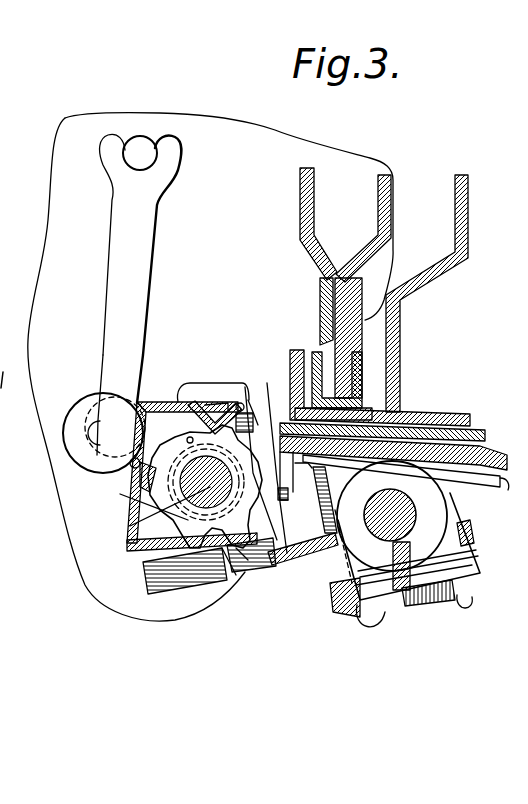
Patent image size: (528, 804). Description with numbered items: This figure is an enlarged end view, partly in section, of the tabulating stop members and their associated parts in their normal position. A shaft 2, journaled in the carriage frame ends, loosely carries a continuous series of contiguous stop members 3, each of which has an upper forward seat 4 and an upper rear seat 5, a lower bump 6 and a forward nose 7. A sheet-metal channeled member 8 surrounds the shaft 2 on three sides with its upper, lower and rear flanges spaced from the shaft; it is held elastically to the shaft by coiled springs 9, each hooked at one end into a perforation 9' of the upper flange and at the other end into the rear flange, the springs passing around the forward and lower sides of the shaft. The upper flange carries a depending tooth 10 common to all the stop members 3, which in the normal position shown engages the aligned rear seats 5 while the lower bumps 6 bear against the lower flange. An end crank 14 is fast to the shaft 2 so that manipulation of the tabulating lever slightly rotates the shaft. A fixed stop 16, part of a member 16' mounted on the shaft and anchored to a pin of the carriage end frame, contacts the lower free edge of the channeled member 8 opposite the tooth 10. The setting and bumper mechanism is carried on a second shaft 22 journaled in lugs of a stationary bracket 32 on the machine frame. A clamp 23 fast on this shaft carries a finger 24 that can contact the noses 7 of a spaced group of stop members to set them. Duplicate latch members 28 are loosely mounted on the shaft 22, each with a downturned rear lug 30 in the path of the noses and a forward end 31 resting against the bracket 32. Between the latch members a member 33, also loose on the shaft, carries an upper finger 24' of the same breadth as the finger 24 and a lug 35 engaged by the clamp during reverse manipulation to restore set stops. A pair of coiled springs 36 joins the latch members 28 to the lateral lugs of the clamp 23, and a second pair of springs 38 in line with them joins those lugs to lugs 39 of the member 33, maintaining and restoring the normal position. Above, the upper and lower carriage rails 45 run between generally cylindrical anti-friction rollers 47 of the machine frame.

The shaft 2 is at (217, 493).
The tabulating stop members 3 is at (130, 523).
The forward seat 4 is at (263, 407).
The rear seat 5 is at (188, 438).
The lower bump 6 is at (197, 530).
The forward nose 7 is at (248, 567).
The channeled member 8 is at (133, 495).
The coiled springs 9 is at (259, 414).
The perforation of upper flange 9' is at (244, 393).
The depending tooth 10 is at (217, 407).
The end crank 14 is at (192, 458).
The fixed stop 16 is at (241, 581).
The stop-carrying member 16' is at (144, 294).
The shaft 22 is at (400, 503).
The clamp 23 is at (438, 548).
The finger 24 is at (303, 563).
The upper finger 24' is at (382, 410).
The latch member 28 is at (492, 480).
The downturned rear lug 30 is at (325, 497).
The forward end 31 is at (500, 482).
The stationary bracket 32 is at (488, 448).
The member 33 is at (418, 416).
The lug 35 is at (383, 614).
The coiled springs 36 is at (326, 520).
The second coiled springs 38 is at (428, 603).
The lugs 39 is at (468, 604).
The carriage rails 45 is at (350, 322).
The anti-friction rollers 47 is at (280, 413).